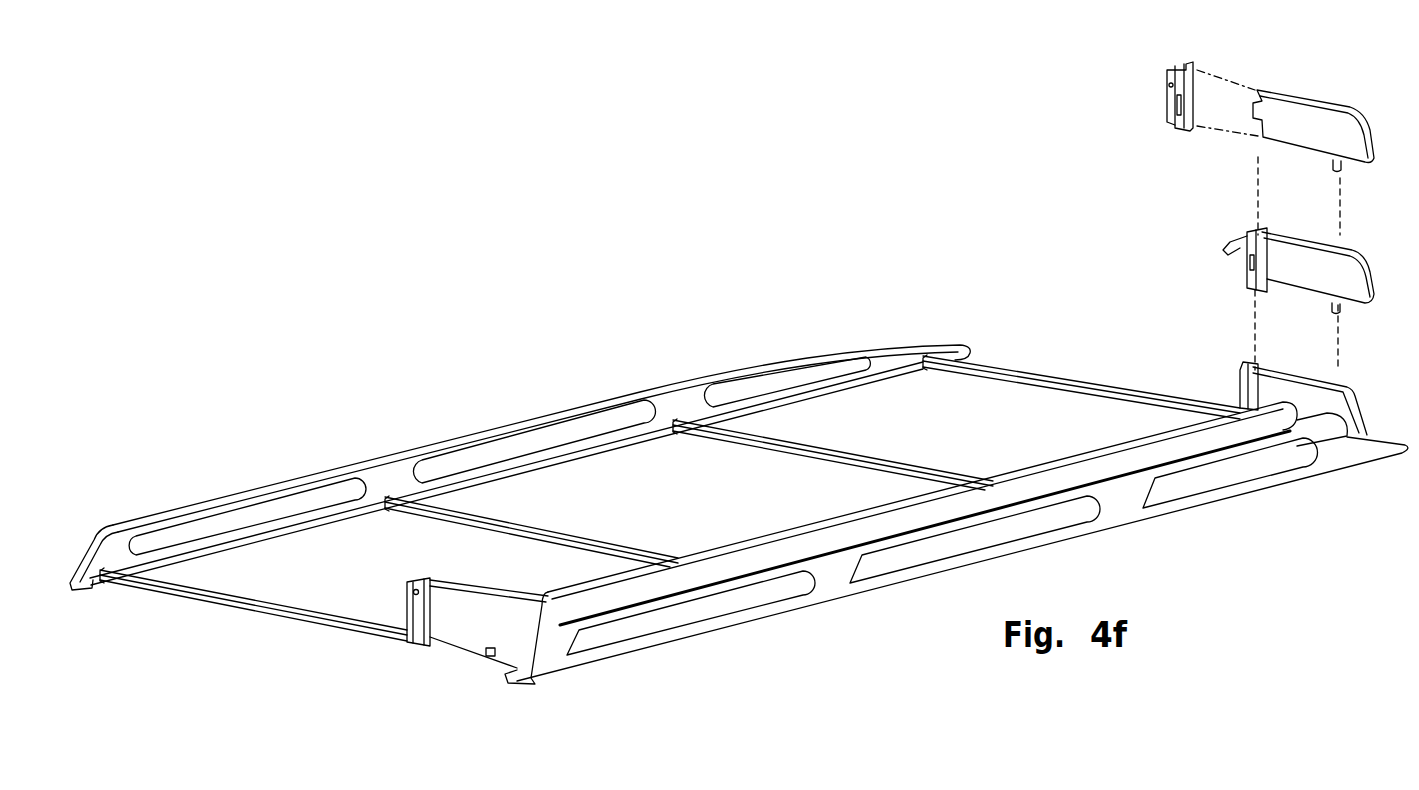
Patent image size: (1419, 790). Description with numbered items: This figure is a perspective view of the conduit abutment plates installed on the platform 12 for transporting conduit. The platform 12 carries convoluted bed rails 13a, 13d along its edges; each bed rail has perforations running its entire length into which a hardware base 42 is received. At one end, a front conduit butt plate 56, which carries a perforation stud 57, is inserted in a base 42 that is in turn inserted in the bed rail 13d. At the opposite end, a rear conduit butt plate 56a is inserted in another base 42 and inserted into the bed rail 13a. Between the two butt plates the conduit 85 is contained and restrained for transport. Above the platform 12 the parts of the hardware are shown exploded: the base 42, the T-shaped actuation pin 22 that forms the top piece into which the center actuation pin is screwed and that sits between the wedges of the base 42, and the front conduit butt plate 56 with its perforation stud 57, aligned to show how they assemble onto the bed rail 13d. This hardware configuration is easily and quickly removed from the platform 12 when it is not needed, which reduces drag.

The platform 12 is at (583, 405).
The bed rail 13a is at (257, 602).
The bed rail 13d is at (1043, 376).
The conduit 85 is at (777, 533).
The hardware base 42 is at (1166, 82).
The front conduit butt plate 56 is at (1330, 102).
The rear conduit butt plate 56a is at (487, 627).
The perforation stud 57 is at (1333, 168).
The T-shaped actuation pin 22 is at (1243, 253).